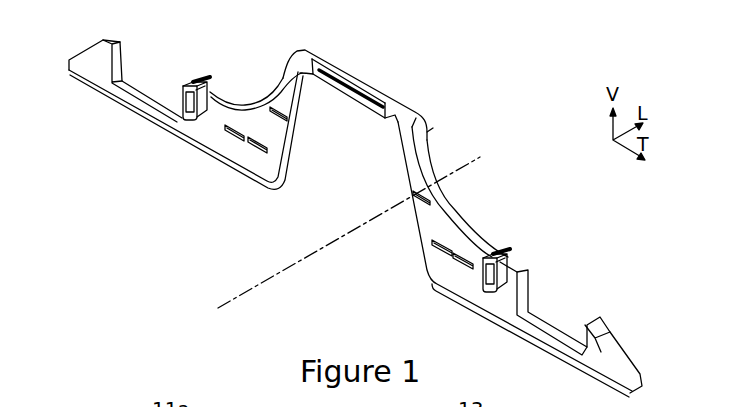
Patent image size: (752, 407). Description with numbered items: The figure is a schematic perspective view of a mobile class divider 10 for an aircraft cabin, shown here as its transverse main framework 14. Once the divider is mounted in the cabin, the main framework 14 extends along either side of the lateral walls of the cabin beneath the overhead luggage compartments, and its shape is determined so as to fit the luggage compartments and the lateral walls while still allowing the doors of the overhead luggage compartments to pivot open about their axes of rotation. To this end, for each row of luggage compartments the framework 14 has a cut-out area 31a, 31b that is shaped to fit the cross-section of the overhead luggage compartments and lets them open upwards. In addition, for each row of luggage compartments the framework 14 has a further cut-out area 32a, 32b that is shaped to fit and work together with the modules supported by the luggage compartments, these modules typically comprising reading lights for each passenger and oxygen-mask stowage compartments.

The longitudinal axis 10 is at (462, 170).
The transverse main framework 14 is at (445, 157).
The cut-out area 31a is at (247, 95).
The cut-out area 31b is at (475, 222).
The cut-out area 32a is at (145, 80).
The cut-out area 32b is at (563, 325).